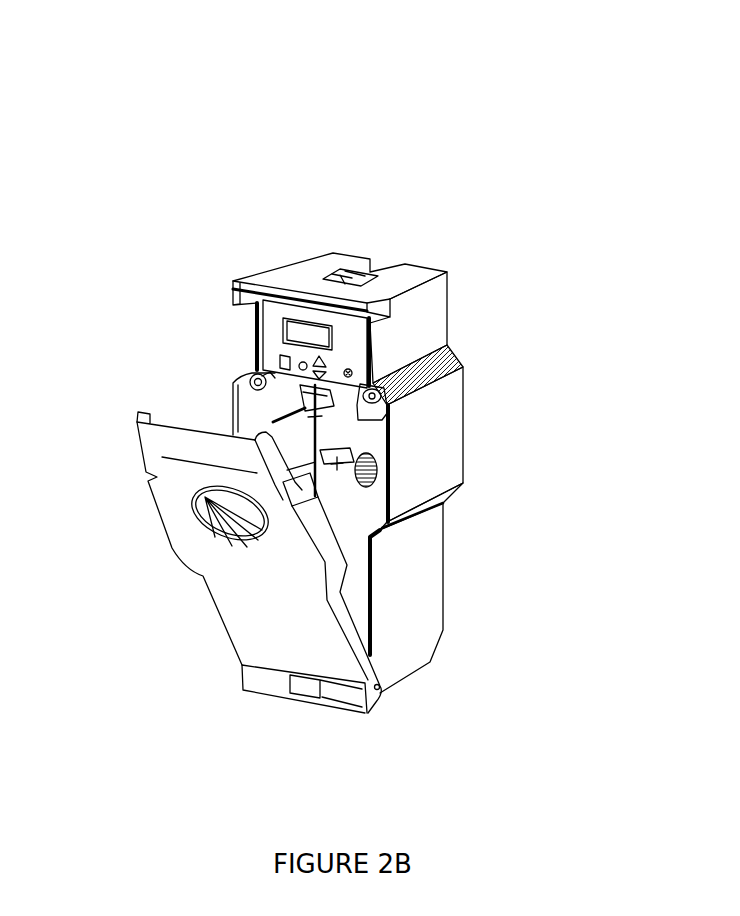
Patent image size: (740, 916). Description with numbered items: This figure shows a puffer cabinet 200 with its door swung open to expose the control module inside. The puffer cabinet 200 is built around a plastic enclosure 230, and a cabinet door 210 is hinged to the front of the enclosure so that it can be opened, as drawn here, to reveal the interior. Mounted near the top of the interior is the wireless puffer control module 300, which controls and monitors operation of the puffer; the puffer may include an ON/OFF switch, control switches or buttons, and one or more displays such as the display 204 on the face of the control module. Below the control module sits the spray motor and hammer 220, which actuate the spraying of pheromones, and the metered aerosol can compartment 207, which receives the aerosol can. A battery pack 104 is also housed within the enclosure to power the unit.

The puffer cabinet 200 is at (521, 98).
The wireless puffer control module 300 is at (350, 348).
The display 204 is at (295, 333).
The spray motor and hammer 220 is at (305, 400).
The metered aerosol can compartment 207 is at (355, 438).
The battery pack 104 is at (363, 508).
The plastic enclosure 230 is at (423, 592).
The cabinet door 210 is at (183, 560).